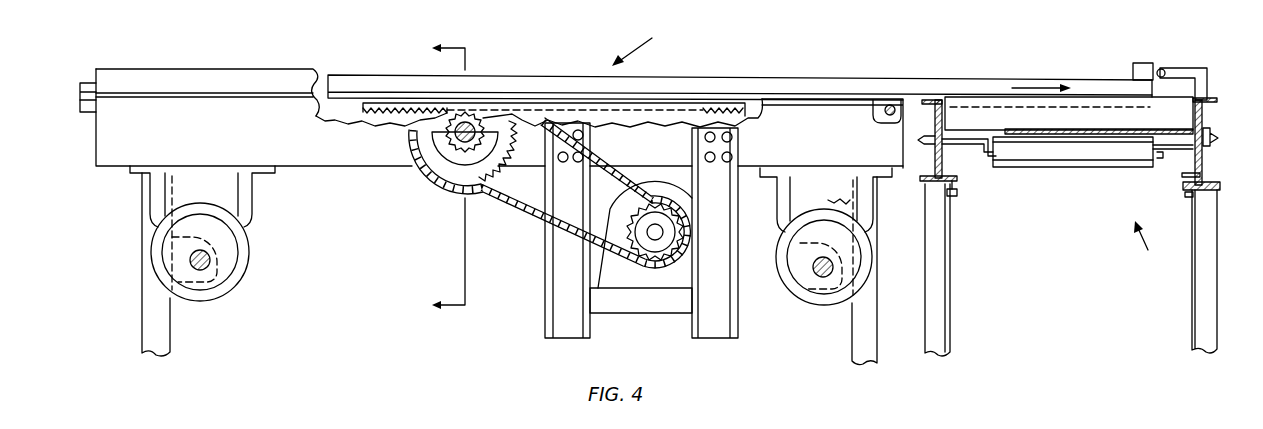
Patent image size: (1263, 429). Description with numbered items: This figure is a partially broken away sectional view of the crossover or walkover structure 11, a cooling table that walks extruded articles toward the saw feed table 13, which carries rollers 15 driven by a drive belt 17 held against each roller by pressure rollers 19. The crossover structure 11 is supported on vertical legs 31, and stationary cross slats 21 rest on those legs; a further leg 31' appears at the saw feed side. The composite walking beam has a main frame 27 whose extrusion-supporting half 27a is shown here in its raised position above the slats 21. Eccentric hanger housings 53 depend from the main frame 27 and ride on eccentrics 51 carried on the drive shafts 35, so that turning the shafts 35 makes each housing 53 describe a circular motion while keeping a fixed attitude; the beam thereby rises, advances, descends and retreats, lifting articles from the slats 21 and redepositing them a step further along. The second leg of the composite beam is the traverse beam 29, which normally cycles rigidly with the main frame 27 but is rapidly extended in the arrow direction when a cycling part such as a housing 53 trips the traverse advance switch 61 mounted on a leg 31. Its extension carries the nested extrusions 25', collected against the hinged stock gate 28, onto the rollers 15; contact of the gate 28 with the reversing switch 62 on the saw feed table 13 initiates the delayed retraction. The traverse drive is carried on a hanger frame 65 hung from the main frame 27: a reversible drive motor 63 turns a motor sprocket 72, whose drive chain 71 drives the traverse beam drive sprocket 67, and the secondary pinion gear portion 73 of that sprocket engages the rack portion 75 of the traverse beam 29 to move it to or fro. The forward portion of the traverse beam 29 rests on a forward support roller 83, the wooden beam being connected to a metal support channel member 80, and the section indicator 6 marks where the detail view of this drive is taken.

The crossover structure 11 is at (643, 44).
The saw feed table 13 is at (1154, 246).
The rollers 15 is at (1210, 127).
The drive belt 17 is at (1040, 160).
The pressure rollers 19 is at (1087, 158).
The stationary cross slats 21 is at (82, 83).
The extrusions 25' is at (1069, 91).
The main frame of composite beam 27 is at (318, 158).
The beam half 27a is at (175, 77).
The hinged stock gate 28 is at (1150, 92).
The traverse beam 29 is at (677, 86).
The vertical legs 31 is at (504, 279).
The support leg 31' is at (1069, 228).
The drive shaft 35 is at (198, 270).
The eccentrics 51 is at (230, 260).
The eccentric hanger housings 53 is at (248, 205).
The section line 6- 6 is at (433, 178).
The traverse advance switch 61 is at (870, 193).
The reversing switch 62 is at (1165, 70).
The reversible drive motor 63 is at (680, 280).
The hanger frame 65 is at (547, 275).
The traverse beam drive sprocket 67 is at (493, 172).
The drive chain 71 is at (433, 175).
The motor sprocket 72 is at (636, 198).
The pinion gear portion 73 is at (408, 127).
The rack portion 75 is at (535, 100).
The metal support channel member 80 is at (80, 105).
The forward support roller 83 is at (875, 101).